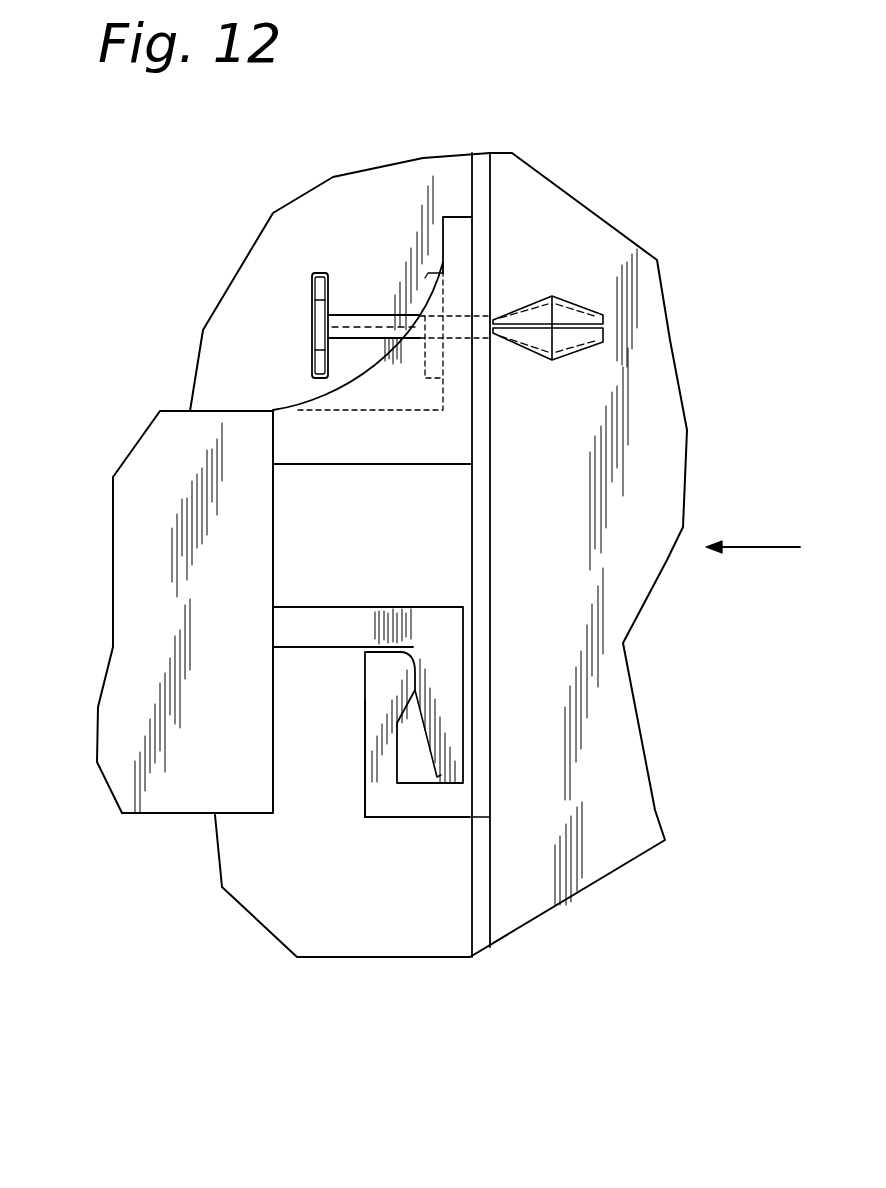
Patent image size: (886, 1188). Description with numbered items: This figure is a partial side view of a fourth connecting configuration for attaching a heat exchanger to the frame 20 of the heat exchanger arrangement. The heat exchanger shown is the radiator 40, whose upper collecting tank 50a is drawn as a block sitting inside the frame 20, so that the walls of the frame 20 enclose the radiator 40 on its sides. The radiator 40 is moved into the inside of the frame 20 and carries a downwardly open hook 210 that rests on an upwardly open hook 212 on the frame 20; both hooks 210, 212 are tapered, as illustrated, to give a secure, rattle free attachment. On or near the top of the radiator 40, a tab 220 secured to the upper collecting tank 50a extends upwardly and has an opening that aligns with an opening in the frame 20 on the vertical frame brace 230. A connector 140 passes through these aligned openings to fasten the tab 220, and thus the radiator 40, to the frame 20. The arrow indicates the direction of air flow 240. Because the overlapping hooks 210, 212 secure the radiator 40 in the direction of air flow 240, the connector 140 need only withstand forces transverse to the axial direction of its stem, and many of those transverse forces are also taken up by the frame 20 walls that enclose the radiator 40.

The frame 20 is at (663, 400).
The radiator 40 is at (128, 622).
The collecting tank 50a is at (158, 445).
The connector 140 is at (359, 305).
The downwardly open hook 210 is at (458, 638).
The upwardly open hook 212 is at (383, 755).
The tab 220 is at (453, 233).
The vertical frame brace 230 is at (478, 812).
The direction of air flow 240 is at (767, 547).